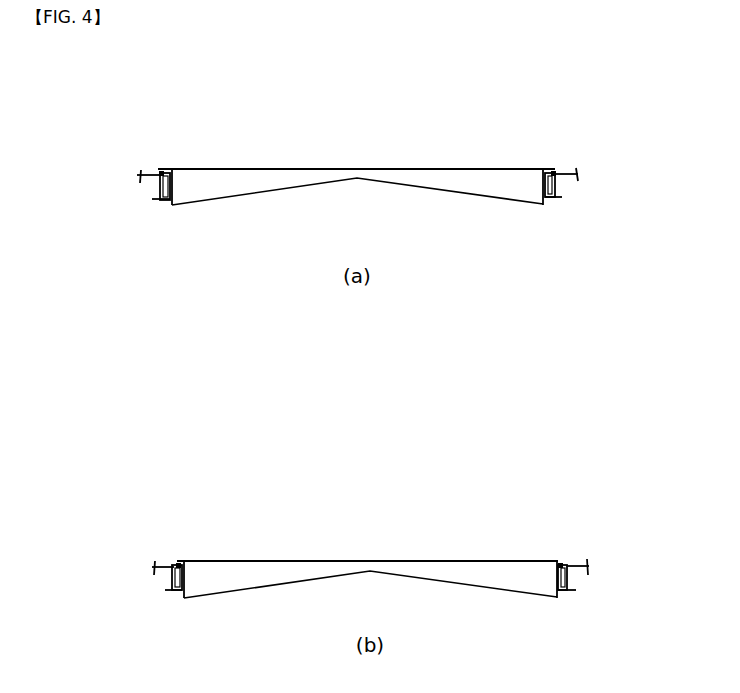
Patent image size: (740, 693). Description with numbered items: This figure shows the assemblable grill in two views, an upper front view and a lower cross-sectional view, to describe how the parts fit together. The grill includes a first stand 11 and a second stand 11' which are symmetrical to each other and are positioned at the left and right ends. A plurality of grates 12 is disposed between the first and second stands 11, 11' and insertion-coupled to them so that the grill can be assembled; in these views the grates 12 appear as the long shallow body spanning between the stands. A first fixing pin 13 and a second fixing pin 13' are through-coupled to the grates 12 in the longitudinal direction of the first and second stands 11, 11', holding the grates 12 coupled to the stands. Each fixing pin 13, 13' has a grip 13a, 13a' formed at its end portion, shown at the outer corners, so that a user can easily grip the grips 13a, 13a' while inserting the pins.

The first stand 11 is at (125, 400).
The second stand 11' is at (607, 361).
The grate 12 is at (346, 137).
The grip 13a is at (130, 160).
The grip 13a' is at (592, 189).
The first fixing pin 13 is at (162, 545).
The second fixing pin 13' is at (544, 544).